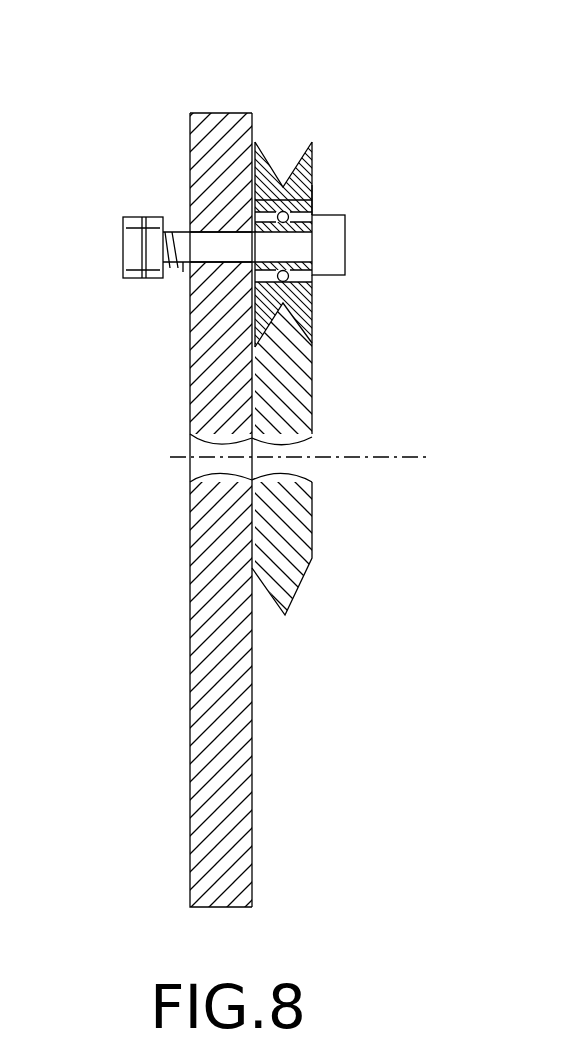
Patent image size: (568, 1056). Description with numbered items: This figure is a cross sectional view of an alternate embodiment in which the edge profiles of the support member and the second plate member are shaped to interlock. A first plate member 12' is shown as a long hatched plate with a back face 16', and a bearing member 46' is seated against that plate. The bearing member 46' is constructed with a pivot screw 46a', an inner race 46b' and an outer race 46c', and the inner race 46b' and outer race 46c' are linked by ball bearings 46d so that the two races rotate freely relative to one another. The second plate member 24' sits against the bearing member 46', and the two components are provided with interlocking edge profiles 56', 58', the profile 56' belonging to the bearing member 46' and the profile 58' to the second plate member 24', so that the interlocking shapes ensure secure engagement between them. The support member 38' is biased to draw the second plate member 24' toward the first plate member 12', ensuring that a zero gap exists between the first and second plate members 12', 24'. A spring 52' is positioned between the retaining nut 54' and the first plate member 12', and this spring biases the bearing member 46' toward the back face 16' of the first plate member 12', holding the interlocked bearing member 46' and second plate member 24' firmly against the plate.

The first plate member 12' is at (152, 510).
The back face 16' is at (304, 510).
The second plate member 24' is at (338, 490).
The support member 38' is at (319, 238).
The bearing member 46' is at (309, 193).
The pivot screw 46a' is at (387, 322).
The inner race 46b' is at (385, 192).
The outer race 46c' is at (402, 172).
The ball bearings 46d is at (272, 200).
The spring 52' is at (171, 222).
The retaining nut 54' is at (96, 265).
The edge profile 56' is at (249, 188).
The edge profile 58' is at (354, 356).